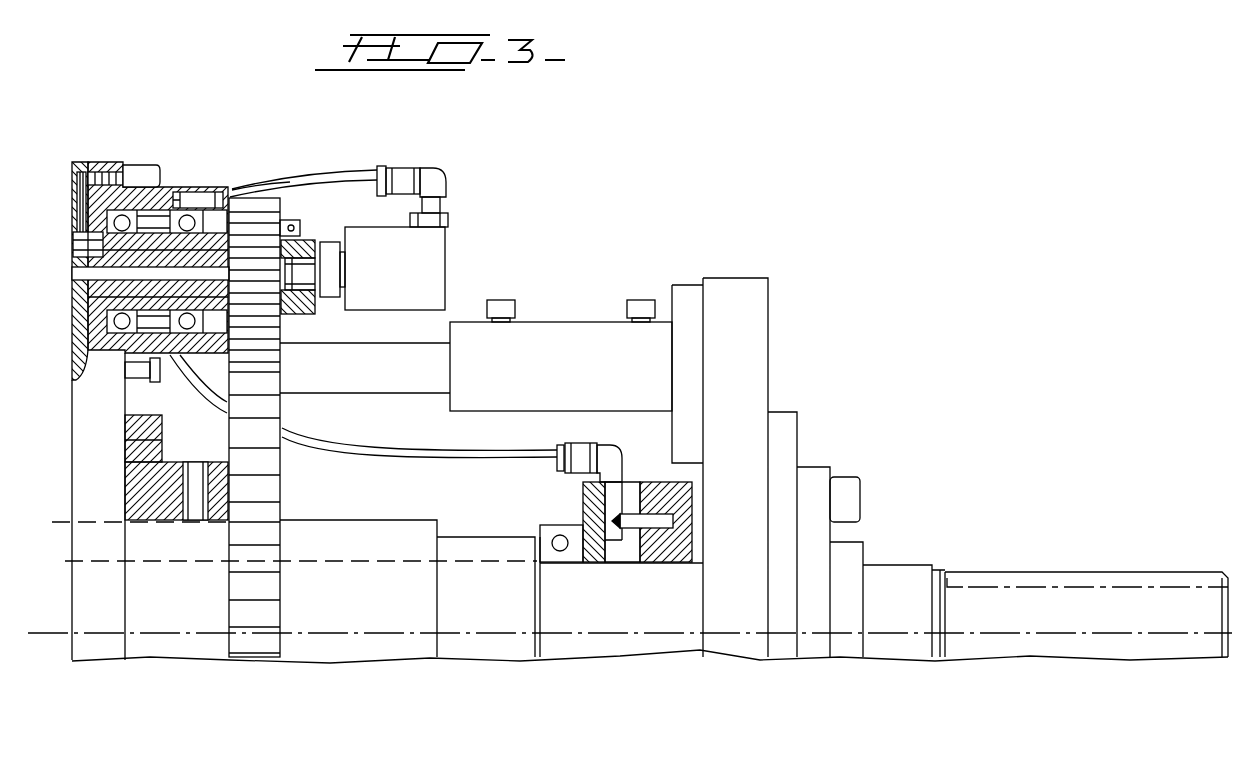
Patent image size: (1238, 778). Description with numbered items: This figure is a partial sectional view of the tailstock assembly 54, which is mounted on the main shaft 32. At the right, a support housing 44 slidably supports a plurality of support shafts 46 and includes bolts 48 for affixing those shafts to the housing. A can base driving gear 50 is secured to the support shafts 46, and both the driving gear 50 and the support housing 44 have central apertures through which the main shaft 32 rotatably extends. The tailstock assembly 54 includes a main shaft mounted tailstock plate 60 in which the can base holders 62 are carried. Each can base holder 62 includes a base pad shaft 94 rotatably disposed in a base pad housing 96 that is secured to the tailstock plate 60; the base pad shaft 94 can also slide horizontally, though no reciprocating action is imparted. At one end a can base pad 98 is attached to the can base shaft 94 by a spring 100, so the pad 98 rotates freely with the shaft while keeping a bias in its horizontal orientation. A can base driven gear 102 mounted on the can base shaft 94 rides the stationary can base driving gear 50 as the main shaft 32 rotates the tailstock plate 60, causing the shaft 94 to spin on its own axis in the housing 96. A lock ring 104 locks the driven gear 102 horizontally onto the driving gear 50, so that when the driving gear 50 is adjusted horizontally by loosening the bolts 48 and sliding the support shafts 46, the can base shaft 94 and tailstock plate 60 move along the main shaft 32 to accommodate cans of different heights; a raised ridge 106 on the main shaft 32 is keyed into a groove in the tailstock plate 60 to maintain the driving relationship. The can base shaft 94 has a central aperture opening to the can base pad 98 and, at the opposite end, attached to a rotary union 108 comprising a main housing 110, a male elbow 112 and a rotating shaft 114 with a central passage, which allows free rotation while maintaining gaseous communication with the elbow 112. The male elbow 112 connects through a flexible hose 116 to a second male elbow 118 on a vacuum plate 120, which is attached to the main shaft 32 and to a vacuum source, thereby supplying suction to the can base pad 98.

The main shaft 32 is at (995, 585).
The support housing 44 is at (560, 338).
The support shafts 46 is at (388, 395).
The bolts 48 is at (500, 305).
The can base driving gear 50 is at (260, 608).
The tailstock assembly 54 is at (275, 158).
The tailstock plate 60 is at (103, 648).
The can base holders 62 is at (165, 190).
The base pad shaft 94 is at (312, 298).
The base pad housing 96 is at (140, 170).
The can base pad 98 is at (72, 225).
The spring 100 is at (88, 250).
The can base driven gear 102 is at (277, 202).
The lock ring 104 is at (303, 313).
The raised ridge 106 is at (415, 527).
The rotary union 108 is at (435, 255).
The main housing 110 is at (410, 282).
The male elbow 112 is at (425, 183).
The rotating shaft 114 is at (337, 262).
The flexible hose 116 is at (350, 178).
The second male elbow 118 is at (612, 455).
The vacuum plate 120 is at (600, 518).